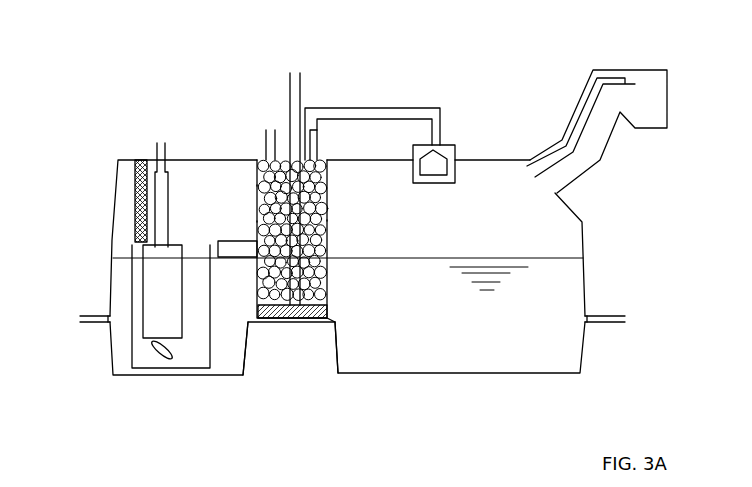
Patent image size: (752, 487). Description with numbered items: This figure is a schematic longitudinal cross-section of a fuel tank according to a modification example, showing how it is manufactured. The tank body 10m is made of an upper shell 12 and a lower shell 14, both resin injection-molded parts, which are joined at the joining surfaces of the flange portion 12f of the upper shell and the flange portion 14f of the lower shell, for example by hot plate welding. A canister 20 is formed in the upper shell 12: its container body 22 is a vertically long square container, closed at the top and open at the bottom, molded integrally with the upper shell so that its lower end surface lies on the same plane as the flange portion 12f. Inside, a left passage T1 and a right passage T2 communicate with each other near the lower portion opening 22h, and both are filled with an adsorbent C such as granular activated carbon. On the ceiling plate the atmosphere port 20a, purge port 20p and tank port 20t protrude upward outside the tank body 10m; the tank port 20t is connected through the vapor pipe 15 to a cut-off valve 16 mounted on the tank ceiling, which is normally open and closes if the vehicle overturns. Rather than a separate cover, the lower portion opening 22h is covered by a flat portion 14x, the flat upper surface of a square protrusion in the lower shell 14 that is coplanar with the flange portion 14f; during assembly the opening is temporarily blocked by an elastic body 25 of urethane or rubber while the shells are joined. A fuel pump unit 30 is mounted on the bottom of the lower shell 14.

The tank body 10m is at (490, 148).
The upper shell 12 is at (580, 206).
The flange portion 12f is at (93, 313).
The lower shell 14 is at (500, 378).
The flange portion 14f is at (100, 328).
The flat portion 14x is at (333, 316).
The vapor pipe 15 is at (385, 107).
The cut-off valve 16 is at (433, 184).
The canister 20 is at (334, 169).
The atmosphere port 20a is at (267, 129).
The purge port 20p is at (296, 70).
The tank port 20t is at (320, 138).
The container body 22 is at (332, 240).
The lower portion opening 22h is at (270, 325).
The elastic body 25 is at (330, 310).
The fuel pump unit 30 is at (128, 243).
The adsorbent C is at (257, 185).
The left passage T1 is at (258, 221).
The right passage T2 is at (330, 220).